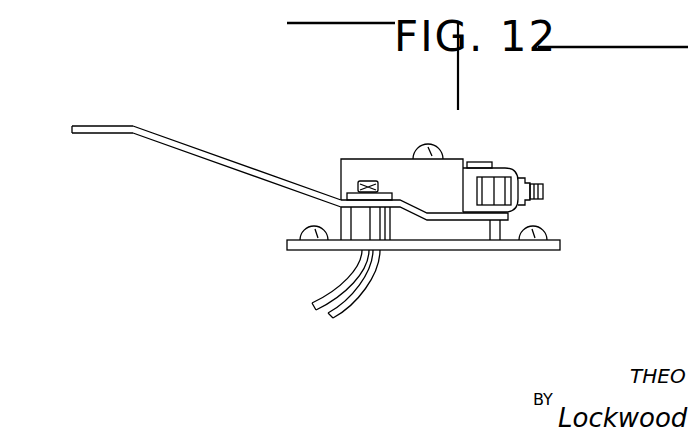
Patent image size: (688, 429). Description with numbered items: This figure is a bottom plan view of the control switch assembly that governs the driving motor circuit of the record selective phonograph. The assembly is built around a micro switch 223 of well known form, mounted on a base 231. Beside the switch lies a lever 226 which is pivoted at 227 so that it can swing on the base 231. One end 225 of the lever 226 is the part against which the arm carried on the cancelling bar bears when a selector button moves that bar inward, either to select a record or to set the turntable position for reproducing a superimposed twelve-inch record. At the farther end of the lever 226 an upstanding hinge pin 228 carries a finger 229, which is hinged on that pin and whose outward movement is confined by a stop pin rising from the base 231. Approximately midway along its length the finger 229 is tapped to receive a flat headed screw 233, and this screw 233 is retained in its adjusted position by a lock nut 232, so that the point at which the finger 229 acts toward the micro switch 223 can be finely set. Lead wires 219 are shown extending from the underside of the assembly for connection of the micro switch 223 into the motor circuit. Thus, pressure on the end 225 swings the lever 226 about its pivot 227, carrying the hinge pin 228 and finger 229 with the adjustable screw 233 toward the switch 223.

The lead wires 219 is at (362, 295).
The micro switch 223 is at (392, 169).
The end of the lever 225 is at (93, 124).
The lever 226 is at (183, 153).
The pivot 227 is at (355, 220).
The hinge pin 228 is at (464, 167).
The finger 229 is at (507, 170).
The base 231 is at (470, 241).
The lock nut 232 is at (528, 206).
The flat headed screw 233 is at (543, 190).